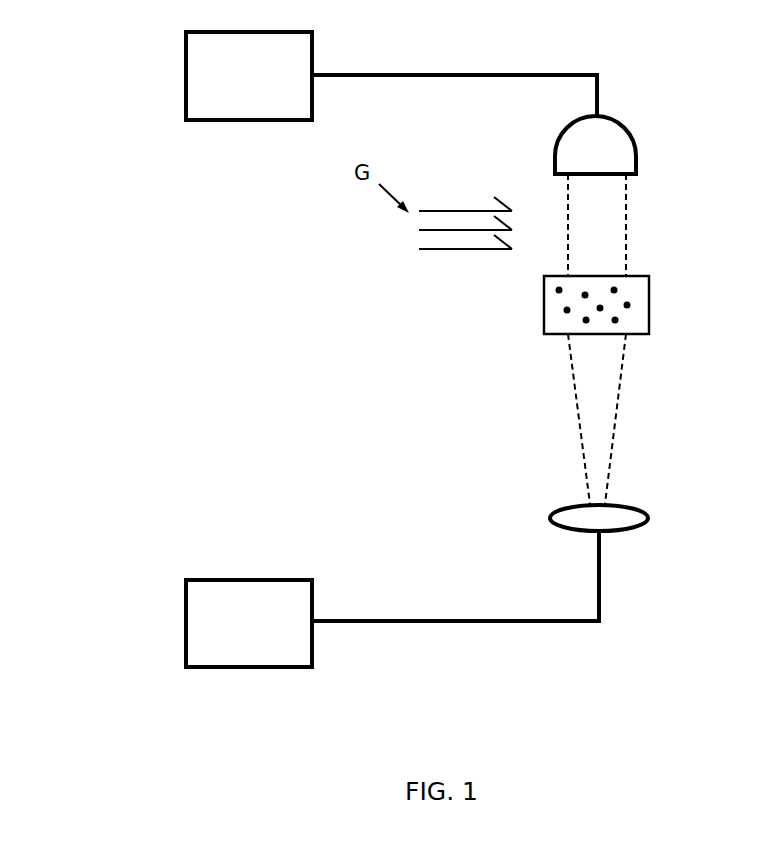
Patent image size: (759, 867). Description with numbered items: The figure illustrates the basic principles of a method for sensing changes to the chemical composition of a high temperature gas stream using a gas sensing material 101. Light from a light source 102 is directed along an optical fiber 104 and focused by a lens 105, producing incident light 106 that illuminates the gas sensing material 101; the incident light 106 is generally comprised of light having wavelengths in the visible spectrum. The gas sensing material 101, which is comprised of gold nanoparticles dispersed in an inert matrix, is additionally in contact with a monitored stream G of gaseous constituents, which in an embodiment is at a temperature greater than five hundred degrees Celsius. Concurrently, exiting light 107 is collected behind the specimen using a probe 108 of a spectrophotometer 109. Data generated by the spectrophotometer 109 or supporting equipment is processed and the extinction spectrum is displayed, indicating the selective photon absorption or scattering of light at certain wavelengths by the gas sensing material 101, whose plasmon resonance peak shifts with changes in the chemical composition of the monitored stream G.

The gas sensing material 101 is at (640, 297).
The light source 102 is at (200, 603).
The optical fiber 104 is at (478, 619).
The lens 105 is at (623, 515).
The incident light 106 is at (607, 408).
The exiting light 107 is at (603, 222).
The probe 108 is at (609, 145).
The spectrophotometer 109 is at (216, 79).